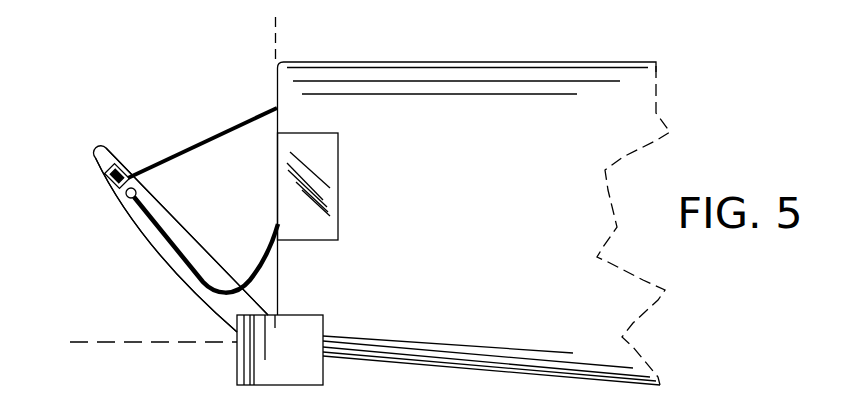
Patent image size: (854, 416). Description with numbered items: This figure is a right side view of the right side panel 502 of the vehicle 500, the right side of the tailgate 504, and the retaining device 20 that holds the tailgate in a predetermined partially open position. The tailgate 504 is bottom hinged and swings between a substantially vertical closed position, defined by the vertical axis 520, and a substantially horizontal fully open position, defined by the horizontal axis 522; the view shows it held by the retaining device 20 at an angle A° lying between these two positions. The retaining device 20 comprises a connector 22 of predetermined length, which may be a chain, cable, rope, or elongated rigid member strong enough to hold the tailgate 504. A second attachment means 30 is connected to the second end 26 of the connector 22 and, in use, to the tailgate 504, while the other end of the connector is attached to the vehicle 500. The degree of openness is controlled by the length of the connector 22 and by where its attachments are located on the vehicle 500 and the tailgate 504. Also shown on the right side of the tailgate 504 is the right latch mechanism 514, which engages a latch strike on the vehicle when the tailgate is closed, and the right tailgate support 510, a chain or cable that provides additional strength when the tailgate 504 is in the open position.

The retaining device 20 is at (181, 119).
The connector 22 is at (217, 137).
The second end 26 is at (131, 176).
The second attachment means 30 is at (125, 158).
The vehicle 500 is at (660, 143).
The right side panel 502 is at (400, 62).
The tailgate 504 is at (213, 260).
The right tailgate support 510 is at (172, 266).
The right latch mechanism 514 is at (106, 172).
The vertical axis 520 is at (278, 33).
The horizontal axis 522 is at (163, 340).
The angle A° A is at (278, 183).